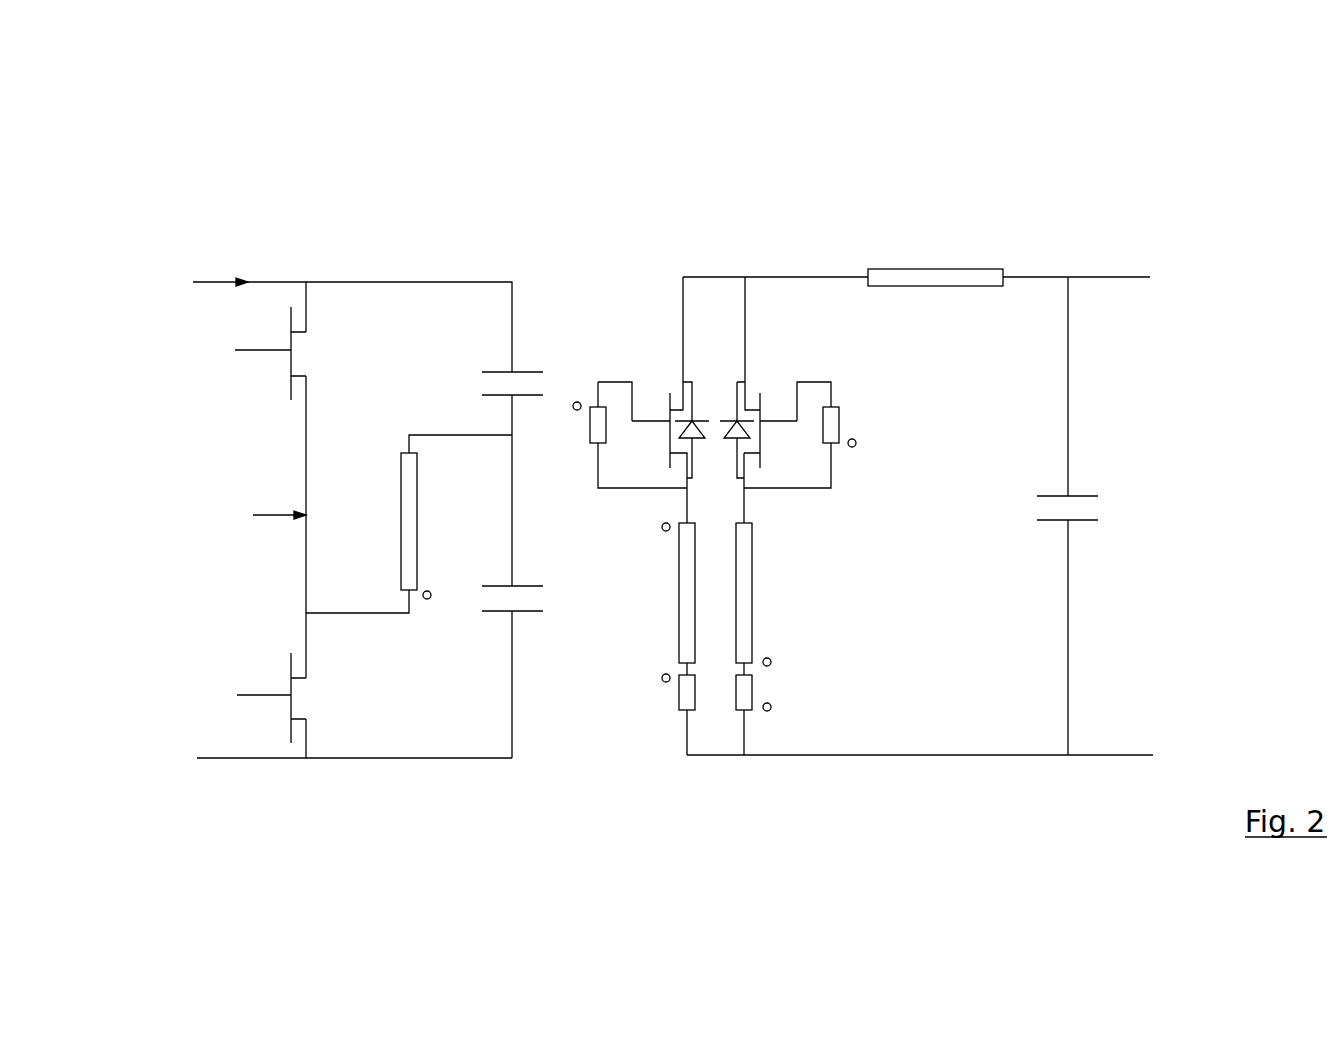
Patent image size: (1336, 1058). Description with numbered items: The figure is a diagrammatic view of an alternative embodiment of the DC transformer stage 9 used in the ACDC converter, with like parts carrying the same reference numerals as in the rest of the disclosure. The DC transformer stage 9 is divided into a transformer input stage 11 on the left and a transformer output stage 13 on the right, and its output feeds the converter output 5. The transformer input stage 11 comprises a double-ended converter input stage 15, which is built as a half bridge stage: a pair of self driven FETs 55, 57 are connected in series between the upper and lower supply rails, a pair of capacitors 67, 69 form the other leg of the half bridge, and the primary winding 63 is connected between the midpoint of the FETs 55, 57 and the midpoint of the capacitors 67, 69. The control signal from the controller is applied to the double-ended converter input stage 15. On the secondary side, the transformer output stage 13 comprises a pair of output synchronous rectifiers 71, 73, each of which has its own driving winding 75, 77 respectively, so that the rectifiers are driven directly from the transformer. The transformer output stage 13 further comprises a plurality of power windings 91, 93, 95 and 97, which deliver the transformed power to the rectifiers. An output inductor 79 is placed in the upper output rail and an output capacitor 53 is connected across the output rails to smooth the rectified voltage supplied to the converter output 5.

The converter output 5 is at (1144, 334).
The DC transformer stage 9 is at (1000, 218).
The transformer input stage 11 is at (540, 786).
The transformer output stage 13 is at (713, 778).
The double-ended converter input stage 15 is at (214, 662).
The output capacitor 53 is at (1083, 495).
The self driven FET 55 is at (255, 349).
The self driven FET 57 is at (291, 732).
The primary winding 63 is at (410, 572).
The capacitor 67 is at (493, 393).
The capacitor 69 is at (492, 612).
The output synchronous rectifier 71 is at (677, 407).
The output synchronous rectifier 73 is at (759, 393).
The driving winding 75 is at (594, 407).
The driving winding 77 is at (837, 423).
The output inductor 79 is at (907, 277).
The power winding 91 is at (688, 698).
The power winding 93 is at (742, 685).
The power winding 95 is at (685, 550).
The power winding 97 is at (743, 545).